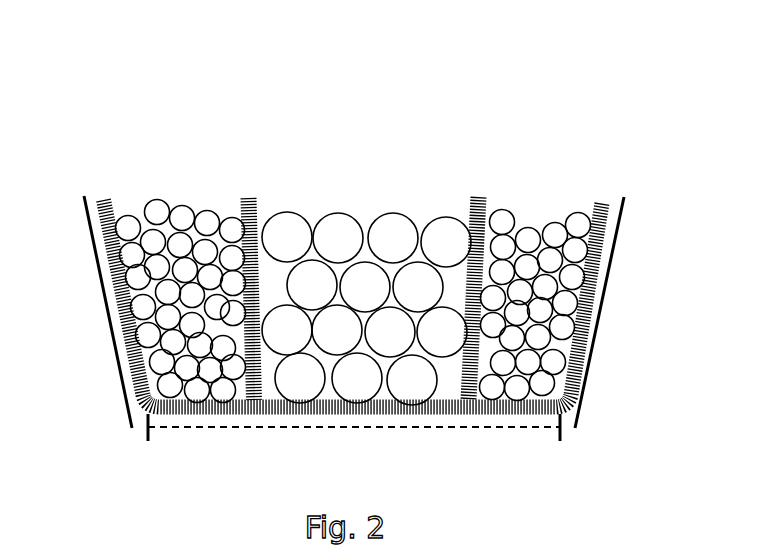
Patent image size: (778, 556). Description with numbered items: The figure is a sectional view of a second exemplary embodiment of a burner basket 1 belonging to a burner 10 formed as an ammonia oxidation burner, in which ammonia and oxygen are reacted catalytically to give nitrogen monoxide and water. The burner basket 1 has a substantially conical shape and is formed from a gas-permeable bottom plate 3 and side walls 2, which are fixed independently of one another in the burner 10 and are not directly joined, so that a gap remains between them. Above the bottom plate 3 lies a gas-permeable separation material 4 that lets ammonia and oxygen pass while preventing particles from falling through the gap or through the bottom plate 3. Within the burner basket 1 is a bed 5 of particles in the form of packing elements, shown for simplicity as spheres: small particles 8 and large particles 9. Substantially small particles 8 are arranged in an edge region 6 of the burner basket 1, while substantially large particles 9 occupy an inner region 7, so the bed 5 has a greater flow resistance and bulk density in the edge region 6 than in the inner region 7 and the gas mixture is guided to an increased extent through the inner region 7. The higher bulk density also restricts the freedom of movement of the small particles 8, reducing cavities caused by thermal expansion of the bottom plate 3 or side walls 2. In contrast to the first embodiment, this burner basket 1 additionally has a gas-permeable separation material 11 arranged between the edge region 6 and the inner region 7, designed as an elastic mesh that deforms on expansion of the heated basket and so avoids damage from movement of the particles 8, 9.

The burner basket 1 is at (638, 162).
The side walls 2 is at (94, 244).
The gas-permeable bottom plate 3 is at (178, 430).
The gas-permeable separation material 4 is at (594, 333).
The bed 5 is at (358, 139).
The edge region 6 is at (158, 177).
The inner region 7 is at (286, 177).
The small particles 8 is at (147, 330).
The large particles 9 is at (434, 161).
The burner 10 is at (433, 72).
The gas-permeable separation material 11 is at (248, 200).